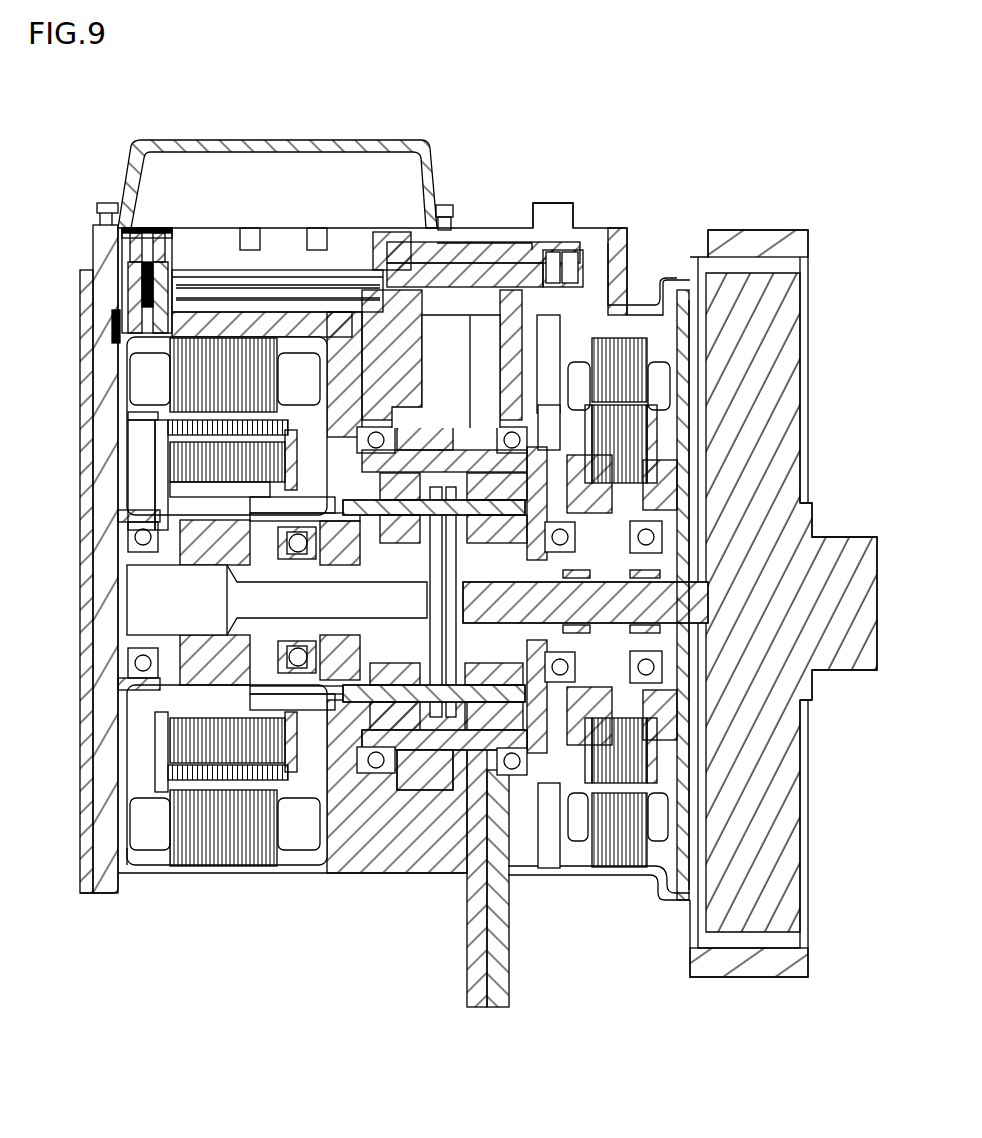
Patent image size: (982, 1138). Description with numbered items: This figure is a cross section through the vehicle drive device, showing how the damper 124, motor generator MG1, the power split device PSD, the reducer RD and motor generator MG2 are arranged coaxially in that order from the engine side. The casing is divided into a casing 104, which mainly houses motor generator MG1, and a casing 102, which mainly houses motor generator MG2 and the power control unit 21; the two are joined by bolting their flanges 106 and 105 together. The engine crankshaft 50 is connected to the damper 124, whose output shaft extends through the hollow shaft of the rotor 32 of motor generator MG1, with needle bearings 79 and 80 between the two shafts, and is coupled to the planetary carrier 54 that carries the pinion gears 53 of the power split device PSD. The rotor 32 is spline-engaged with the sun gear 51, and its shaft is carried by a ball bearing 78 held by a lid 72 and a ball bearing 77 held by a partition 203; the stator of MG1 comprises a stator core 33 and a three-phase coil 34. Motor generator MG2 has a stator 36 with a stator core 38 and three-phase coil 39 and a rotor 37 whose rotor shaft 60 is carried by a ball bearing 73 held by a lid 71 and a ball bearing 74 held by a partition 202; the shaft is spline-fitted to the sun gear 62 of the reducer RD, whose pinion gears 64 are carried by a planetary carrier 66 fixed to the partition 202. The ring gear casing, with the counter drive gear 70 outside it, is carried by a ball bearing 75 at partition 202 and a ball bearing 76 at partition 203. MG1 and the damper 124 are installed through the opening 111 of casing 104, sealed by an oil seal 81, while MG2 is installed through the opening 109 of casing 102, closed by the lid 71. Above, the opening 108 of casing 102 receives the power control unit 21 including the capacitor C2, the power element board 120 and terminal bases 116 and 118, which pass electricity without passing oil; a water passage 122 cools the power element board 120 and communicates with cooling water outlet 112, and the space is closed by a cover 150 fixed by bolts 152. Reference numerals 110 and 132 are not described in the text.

The power control unit 21 is at (368, 210).
The rotor 32 is at (680, 771).
The stator core 33 is at (627, 868).
The three-phase coil 34 is at (668, 826).
The stator 36 is at (128, 770).
The rotor 37 is at (140, 450).
The stator core 38 is at (203, 868).
The three-phase coil 39 is at (140, 835).
The crank shaft 50 is at (878, 615).
The sun gear 51 is at (700, 556).
The pinion gears 53 is at (440, 428).
The planetary carrier 54 is at (425, 245).
The rotor shaft 60 is at (290, 528).
The sun gear 62 is at (215, 592).
The pinion gear 64 is at (165, 470).
The planetary carrier 66 is at (300, 486).
The counter drive gear 70 is at (397, 770).
The lid 71 is at (88, 300).
The lid 72 is at (695, 325).
The ball bearing 73 is at (250, 540).
The ball bearing 74 is at (440, 510).
The ball bearing 75 is at (373, 430).
The ball bearing 76 is at (463, 428).
The ball bearing 77 is at (655, 505).
The ball bearing 78 is at (600, 540).
The needle bearing 79 is at (640, 606).
The needle bearing 80 is at (560, 600).
The oil seal 81 is at (690, 578).
The casing 102 is at (480, 1015).
The casing 104 is at (810, 1015).
The flange 105 is at (468, 985).
The flange 106 is at (510, 985).
The opening 108 is at (118, 245).
The opening 109 is at (135, 866).
The housing 110 is at (612, 250).
The opening 111 is at (795, 262).
The cooling water outlet 112 is at (553, 203).
The terminal base 116 is at (158, 230).
The terminal base 118 is at (400, 238).
The power element board 120 is at (330, 275).
The water passage 122 is at (112, 345).
The damper 124 is at (803, 355).
The rotor end plate 132 is at (160, 422).
The cover 150 is at (268, 142).
The bolts 152 is at (448, 207).
The partition 202 is at (400, 555).
The partition 203 is at (572, 449).
The capacitor C2 is at (222, 228).
The motor generator MG1 is at (593, 896).
The motor generator MG2 is at (243, 896).
The reducer RD is at (386, 783).
The power split device PSD is at (470, 796).